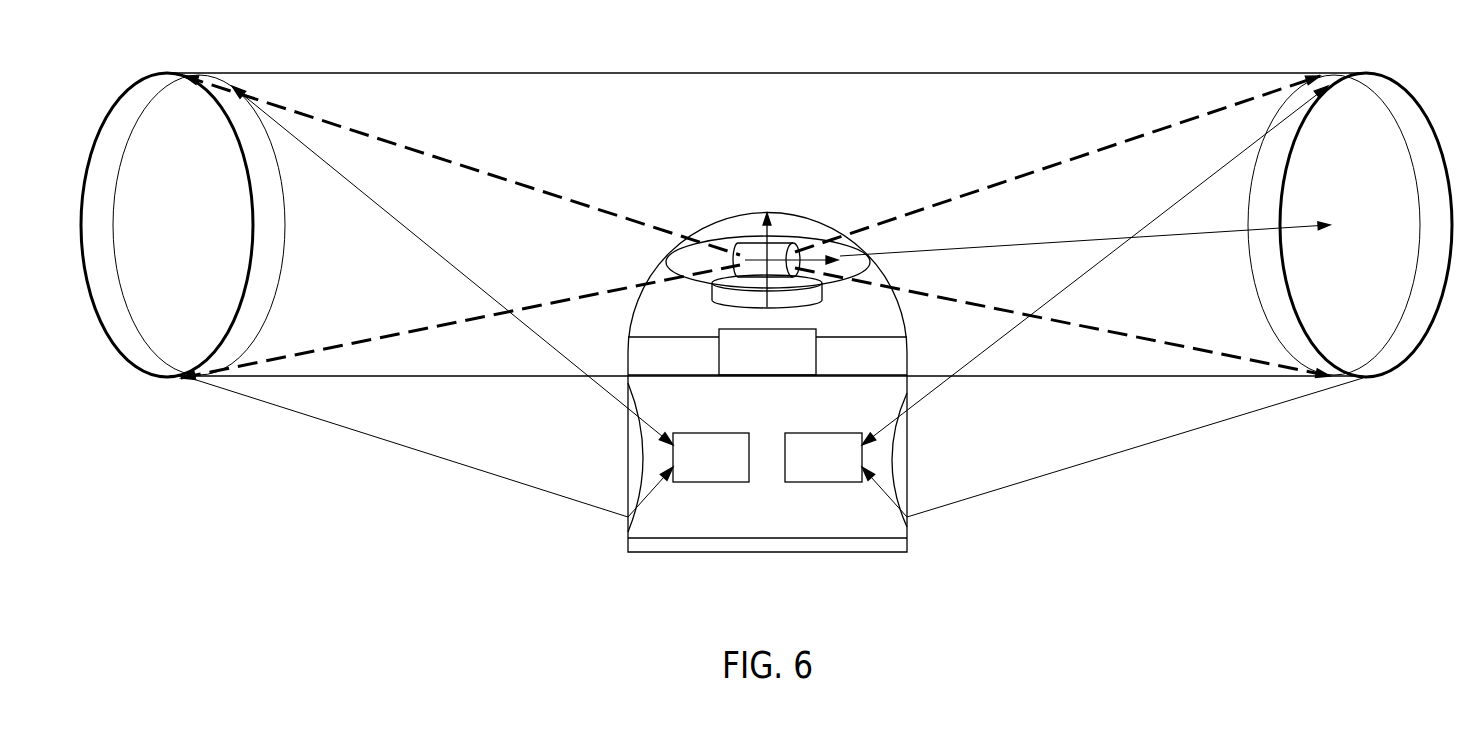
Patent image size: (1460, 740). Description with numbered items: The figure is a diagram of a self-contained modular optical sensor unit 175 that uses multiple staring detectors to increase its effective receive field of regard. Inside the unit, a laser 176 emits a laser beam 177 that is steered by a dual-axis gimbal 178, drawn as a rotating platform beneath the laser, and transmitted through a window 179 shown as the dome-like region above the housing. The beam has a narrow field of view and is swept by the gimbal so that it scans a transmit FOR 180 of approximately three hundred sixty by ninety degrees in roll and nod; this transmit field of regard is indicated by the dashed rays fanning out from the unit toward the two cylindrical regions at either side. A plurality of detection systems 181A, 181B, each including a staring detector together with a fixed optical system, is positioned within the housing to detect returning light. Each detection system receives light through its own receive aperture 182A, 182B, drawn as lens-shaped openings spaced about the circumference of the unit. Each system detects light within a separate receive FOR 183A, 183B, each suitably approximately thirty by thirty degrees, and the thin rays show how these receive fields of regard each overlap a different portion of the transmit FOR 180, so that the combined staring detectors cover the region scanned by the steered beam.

The modular optical sensor unit 175 is at (692, 578).
The laser 176 is at (719, 352).
The laser beam 177 is at (1336, 225).
The dual-axis gimbal 178 is at (805, 312).
The window 179 is at (682, 265).
The transmit FOR 180 is at (752, 72).
The detection system 181A is at (970, 515).
The detection system 181B is at (565, 520).
The receive aperture 182A is at (902, 457).
The receive aperture 182B is at (635, 458).
The receive FOR 183A is at (1252, 268).
The receive FOR 183B is at (283, 268).